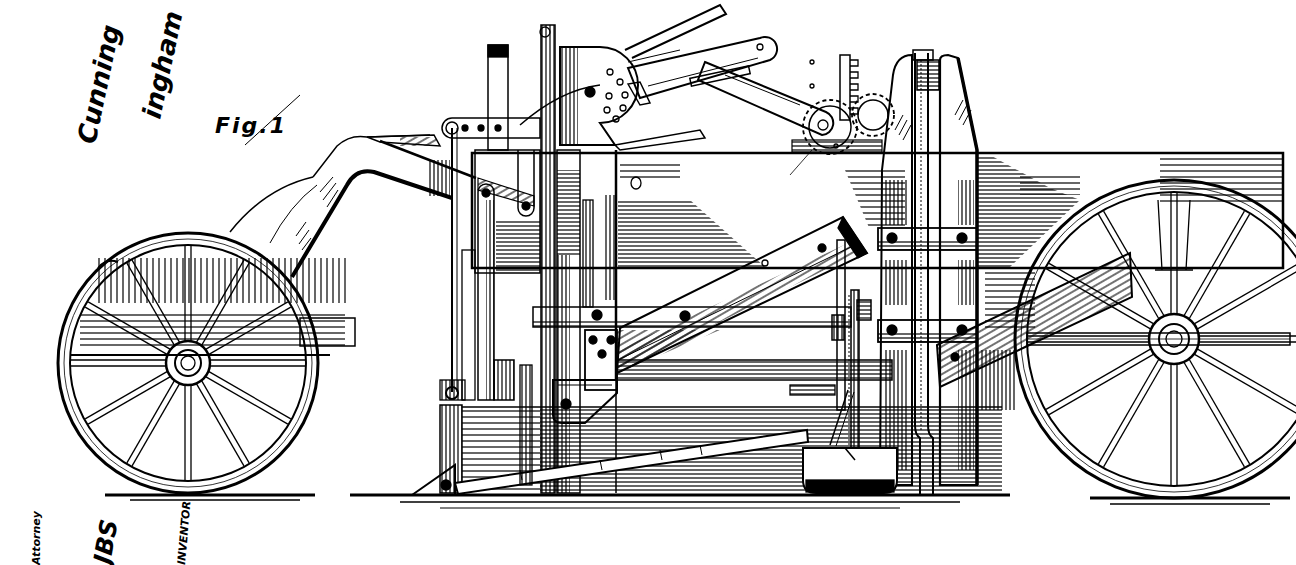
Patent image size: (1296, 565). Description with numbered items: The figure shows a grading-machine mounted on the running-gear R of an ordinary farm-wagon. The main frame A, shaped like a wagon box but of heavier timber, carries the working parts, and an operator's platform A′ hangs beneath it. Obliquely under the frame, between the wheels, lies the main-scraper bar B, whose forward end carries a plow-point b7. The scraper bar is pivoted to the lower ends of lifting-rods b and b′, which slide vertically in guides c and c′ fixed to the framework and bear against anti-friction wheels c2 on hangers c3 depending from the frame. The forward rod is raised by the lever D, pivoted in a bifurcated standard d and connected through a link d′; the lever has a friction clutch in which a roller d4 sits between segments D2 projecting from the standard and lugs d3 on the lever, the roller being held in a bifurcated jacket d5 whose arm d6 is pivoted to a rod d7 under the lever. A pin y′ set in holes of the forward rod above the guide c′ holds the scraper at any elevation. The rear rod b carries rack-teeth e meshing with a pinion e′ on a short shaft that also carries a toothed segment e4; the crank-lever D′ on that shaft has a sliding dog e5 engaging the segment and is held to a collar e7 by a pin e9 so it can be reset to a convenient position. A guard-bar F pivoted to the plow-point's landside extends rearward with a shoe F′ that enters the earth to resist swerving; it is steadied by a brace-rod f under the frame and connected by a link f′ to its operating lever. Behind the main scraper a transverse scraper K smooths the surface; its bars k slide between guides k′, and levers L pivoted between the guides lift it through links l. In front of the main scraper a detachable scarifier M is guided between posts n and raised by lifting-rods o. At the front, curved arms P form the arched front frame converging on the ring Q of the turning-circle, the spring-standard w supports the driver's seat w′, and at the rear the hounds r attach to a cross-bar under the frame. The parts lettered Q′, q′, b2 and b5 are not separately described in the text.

The main frame A is at (877, 210).
The operator's platform A′ is at (874, 302).
The main-scraper bar B is at (692, 420).
The forward lever D is at (702, 67).
The crank-lever D′ is at (792, 122).
The segments D2 is at (818, 142).
The guard-bar F is at (625, 480).
The shoe F′ is at (850, 470).
The link f′ is at (858, 460).
The transverse scraper K is at (936, 467).
The lever L is at (924, 46).
The scarifier M is at (456, 362).
The curved arms P is at (384, 206).
The iron ring Q is at (286, 280).
The wheel rim Q′ is at (92, 286).
The running-gear R is at (1196, 292).
The lifting-rod b is at (840, 299).
The lifting-rod b′ is at (576, 253).
The block b2 is at (866, 304).
The foot plate b5 is at (448, 496).
The plow-point b7 is at (433, 473).
The guide c is at (832, 326).
The guide c′ is at (532, 316).
The anti-friction wheels c2 is at (620, 405).
The hangers c3 is at (584, 345).
The bifurcated standard d is at (589, 86).
The link d′ is at (560, 80).
The lugs d3 is at (630, 100).
The roller d4 is at (616, 50).
The bifurcated jacket d5 is at (654, 55).
The arm d6 is at (642, 98).
The rod d7 is at (706, 82).
The rack-teeth e is at (858, 60).
The pinion e′ is at (874, 98).
The segment e4 is at (800, 142).
The sliding dog e5 is at (812, 82).
The collar e7 is at (810, 53).
The pin e9 is at (836, 143).
The brace-rod f is at (800, 400).
The bars k is at (912, 288).
The guides k′ is at (929, 285).
The rods or links l is at (930, 166).
The posts n is at (500, 112).
The lifting-rods o is at (634, 184).
The hub q′ is at (264, 313).
The rear hounds r is at (1158, 329).
The spring-standard w is at (298, 176).
The driver's seat w′ is at (403, 131).
The pin y′ is at (507, 211).